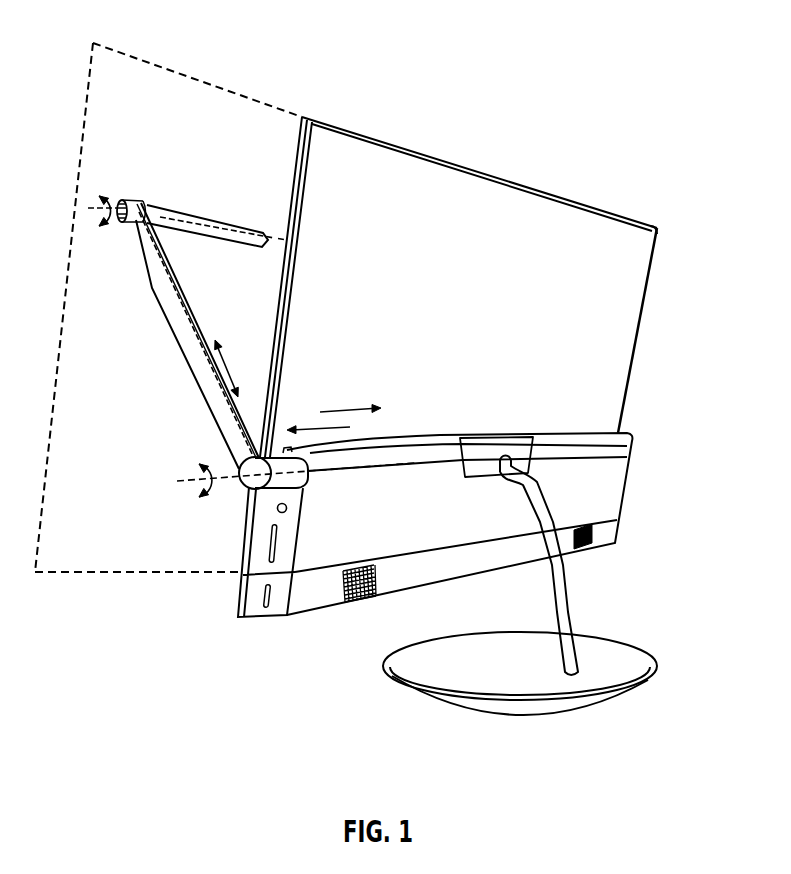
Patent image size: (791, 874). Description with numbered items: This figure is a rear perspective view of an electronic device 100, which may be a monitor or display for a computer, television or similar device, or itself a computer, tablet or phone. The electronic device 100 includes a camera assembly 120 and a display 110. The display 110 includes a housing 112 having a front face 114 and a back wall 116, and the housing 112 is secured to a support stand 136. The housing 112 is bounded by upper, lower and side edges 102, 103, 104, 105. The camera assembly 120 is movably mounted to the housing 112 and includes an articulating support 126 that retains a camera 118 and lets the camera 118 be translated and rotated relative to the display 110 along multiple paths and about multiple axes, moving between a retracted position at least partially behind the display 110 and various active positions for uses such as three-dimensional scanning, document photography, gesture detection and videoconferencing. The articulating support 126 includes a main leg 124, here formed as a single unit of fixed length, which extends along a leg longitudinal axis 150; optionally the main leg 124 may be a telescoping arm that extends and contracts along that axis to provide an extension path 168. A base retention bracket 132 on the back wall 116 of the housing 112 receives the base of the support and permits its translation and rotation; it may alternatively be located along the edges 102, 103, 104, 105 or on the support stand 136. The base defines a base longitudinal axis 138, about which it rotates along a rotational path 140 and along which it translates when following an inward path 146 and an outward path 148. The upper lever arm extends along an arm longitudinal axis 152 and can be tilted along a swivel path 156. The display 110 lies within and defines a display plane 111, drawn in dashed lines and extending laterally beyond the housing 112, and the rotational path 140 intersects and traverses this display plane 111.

The electronic device 100 is at (323, 69).
The edge of the housing 102 is at (580, 200).
The edge of the housing 103 is at (240, 578).
The edge of the housing 104 is at (279, 302).
The edge of the housing 105 is at (641, 324).
The display 110 is at (513, 181).
The display plane 111 is at (98, 573).
The housing 112 is at (262, 245).
The front face 114 is at (296, 153).
The back wall 116 is at (636, 249).
The camera 118 is at (213, 221).
The camera assembly 120 is at (215, 106).
The main leg 124 is at (186, 347).
The articulating support 126 is at (148, 290).
The base retention bracket 132 is at (360, 470).
The support stand 136 is at (568, 592).
The base longitudinal axis 138 is at (178, 481).
The rotational path 140 is at (211, 490).
The inward path 146 is at (347, 405).
The outward path 148 is at (310, 427).
The leg longitudinal axis 150 is at (135, 182).
The arm longitudinal axis 152 is at (90, 210).
The swivel path 156 is at (108, 200).
The extension path 168 is at (229, 367).